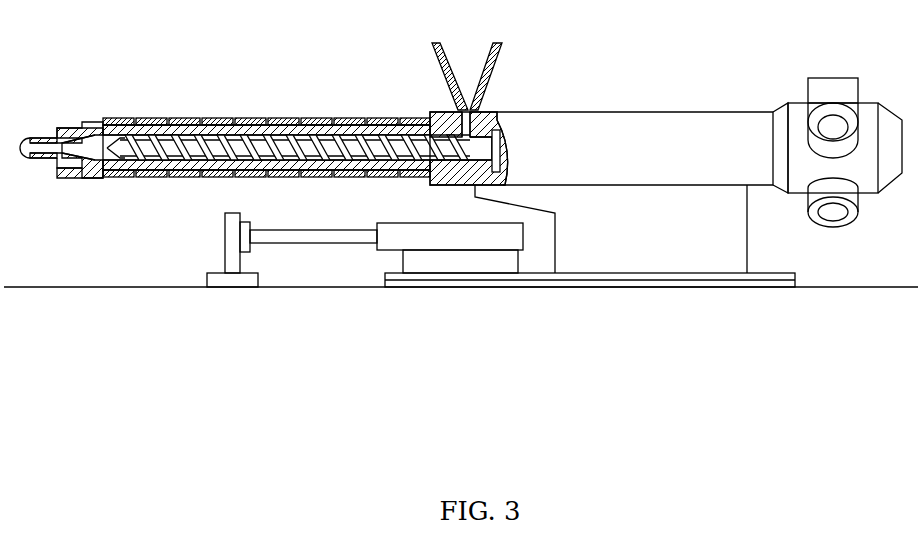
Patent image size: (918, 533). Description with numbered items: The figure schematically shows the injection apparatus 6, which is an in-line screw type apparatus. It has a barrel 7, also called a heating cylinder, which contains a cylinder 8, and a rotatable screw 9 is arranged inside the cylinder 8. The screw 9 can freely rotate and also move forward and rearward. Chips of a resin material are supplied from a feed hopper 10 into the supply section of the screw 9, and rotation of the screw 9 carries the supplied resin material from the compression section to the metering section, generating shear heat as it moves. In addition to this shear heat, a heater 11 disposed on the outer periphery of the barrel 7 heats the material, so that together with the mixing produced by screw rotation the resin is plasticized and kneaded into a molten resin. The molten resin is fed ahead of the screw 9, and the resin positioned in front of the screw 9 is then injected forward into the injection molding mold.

The injection apparatus 6 is at (176, 93).
The barrel 7 is at (152, 178).
The cylinder 8 is at (212, 178).
The screw 9 is at (253, 118).
The feed hopper 10 is at (493, 68).
The heater 11 is at (338, 118).